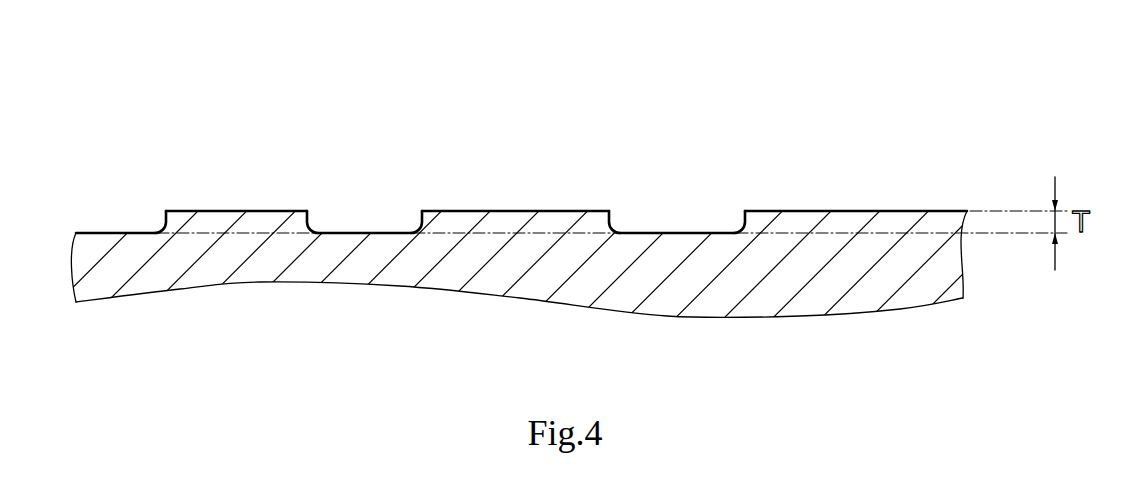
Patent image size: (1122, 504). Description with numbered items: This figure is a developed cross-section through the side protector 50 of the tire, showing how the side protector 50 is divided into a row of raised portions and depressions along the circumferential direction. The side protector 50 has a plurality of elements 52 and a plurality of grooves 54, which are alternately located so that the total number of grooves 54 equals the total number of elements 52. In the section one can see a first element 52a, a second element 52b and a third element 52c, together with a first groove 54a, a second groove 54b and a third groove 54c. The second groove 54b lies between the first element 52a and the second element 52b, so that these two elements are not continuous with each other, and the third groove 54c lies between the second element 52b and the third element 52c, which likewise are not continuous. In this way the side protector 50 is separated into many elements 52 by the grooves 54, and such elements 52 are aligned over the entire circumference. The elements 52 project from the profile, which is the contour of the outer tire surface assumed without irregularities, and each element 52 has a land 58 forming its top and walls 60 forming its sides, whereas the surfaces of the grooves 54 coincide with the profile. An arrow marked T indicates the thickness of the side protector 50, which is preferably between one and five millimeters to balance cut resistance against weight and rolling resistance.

The side protector 50 is at (910, 174).
The elements 52 is at (612, 162).
The first element 52a is at (202, 222).
The second element 52b is at (487, 222).
The third element 52c is at (817, 222).
The grooves 54 is at (400, 162).
The first groove 54a is at (103, 233).
The second groove 54b is at (360, 233).
The third groove 54c is at (678, 233).
The lands 58 is at (255, 211).
The walls 60 is at (156, 229).